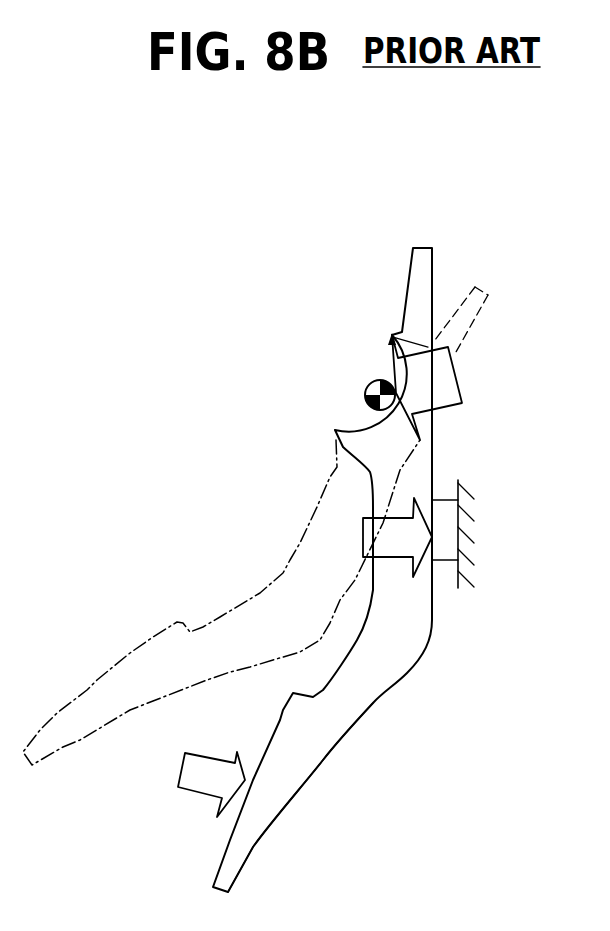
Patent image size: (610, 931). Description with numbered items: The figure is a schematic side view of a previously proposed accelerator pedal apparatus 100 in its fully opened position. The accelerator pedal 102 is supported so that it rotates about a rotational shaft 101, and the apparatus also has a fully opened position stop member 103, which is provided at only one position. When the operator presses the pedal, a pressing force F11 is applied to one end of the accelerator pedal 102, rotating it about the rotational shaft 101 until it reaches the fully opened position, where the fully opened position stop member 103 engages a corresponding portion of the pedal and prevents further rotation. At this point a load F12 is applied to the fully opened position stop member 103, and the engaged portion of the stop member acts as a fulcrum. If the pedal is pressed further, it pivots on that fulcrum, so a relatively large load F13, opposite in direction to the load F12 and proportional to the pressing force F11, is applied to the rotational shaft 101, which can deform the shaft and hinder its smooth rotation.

The accelerator pedal apparatus 100 is at (470, 212).
The rotational shaft 101 is at (380, 395).
The accelerator pedal 102 is at (355, 692).
The fully opened position stop member 103 is at (442, 545).
The pressing force F11 is at (192, 778).
The load F12 is at (387, 527).
The load F13 is at (437, 392).